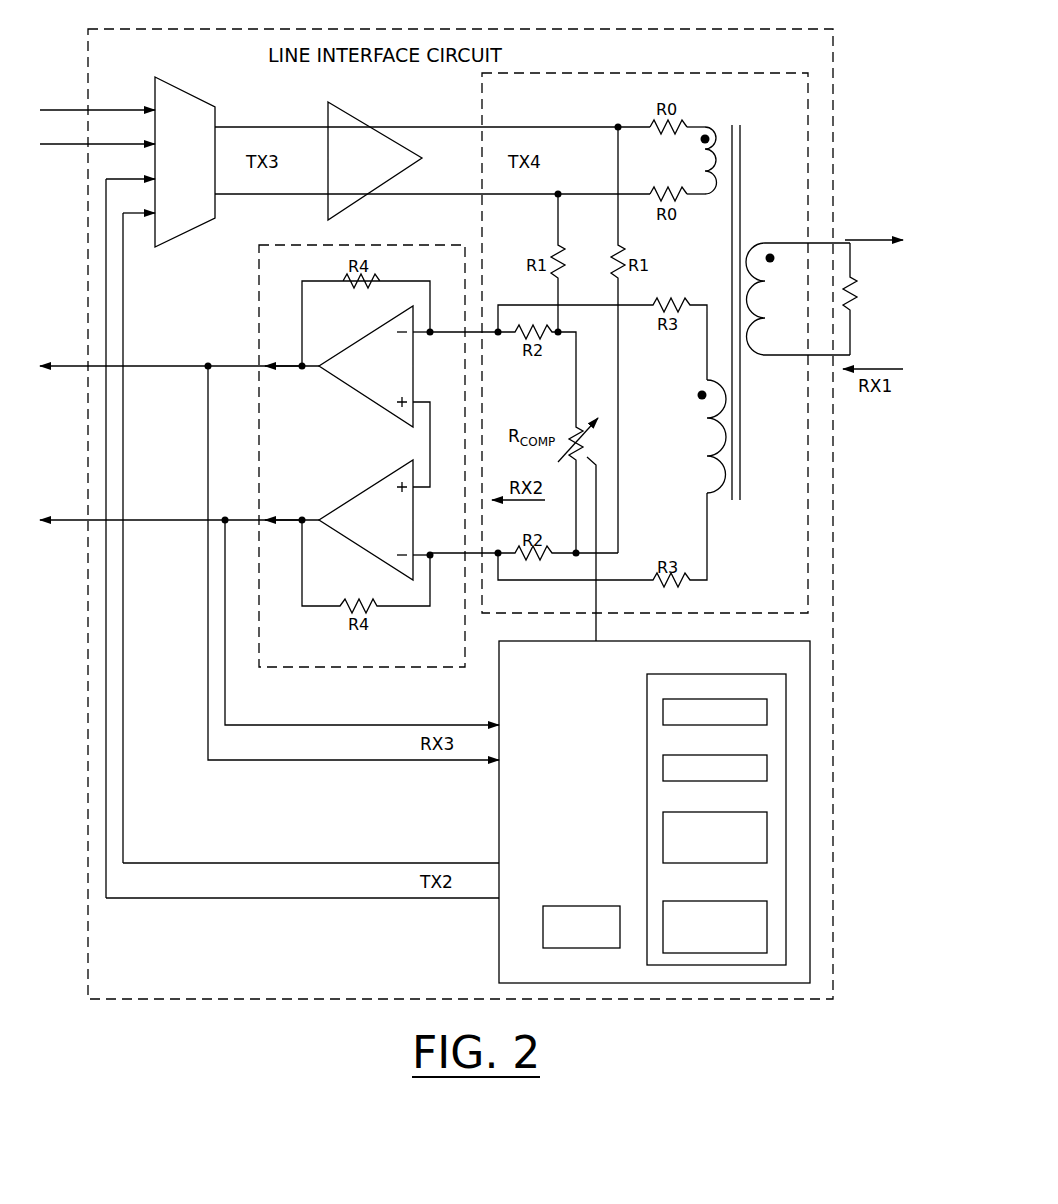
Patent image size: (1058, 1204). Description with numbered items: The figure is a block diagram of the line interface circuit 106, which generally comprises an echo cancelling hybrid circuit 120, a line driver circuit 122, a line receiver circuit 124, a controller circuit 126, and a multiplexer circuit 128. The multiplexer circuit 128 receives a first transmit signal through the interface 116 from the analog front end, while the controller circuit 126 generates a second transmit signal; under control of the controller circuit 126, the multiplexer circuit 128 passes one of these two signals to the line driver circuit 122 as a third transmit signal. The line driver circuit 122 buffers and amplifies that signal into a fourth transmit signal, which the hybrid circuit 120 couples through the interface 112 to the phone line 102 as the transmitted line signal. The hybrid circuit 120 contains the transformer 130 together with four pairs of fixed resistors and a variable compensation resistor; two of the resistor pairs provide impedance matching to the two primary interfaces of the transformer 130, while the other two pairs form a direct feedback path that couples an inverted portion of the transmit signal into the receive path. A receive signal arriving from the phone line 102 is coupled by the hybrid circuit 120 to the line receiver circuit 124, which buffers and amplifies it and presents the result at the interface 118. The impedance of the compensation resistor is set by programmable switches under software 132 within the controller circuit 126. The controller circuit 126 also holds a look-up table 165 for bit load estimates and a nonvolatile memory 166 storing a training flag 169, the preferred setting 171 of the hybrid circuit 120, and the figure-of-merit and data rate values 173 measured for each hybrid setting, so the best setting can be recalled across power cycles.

The line interface circuit 106 is at (160, 29).
The interface 116 is at (88, 109).
The multiplexer circuit 128 is at (188, 94).
The line driver circuit 122 is at (347, 113).
The echo cancelling hybrid circuit 120 is at (598, 73).
The transformer 130 is at (740, 126).
The interface 112 is at (833, 240).
The phone line 102 is at (852, 262).
The interface 118 is at (88, 366).
The line receiver circuit 124 is at (314, 245).
The controller circuit 126 is at (499, 926).
The nonvolatile memory 166 is at (733, 674).
The table 165 is at (727, 699).
The training flag 169 is at (727, 755).
The preferred setting 171 is at (727, 812).
The FOM/data rate values 173 is at (727, 901).
The software 132 is at (584, 948).